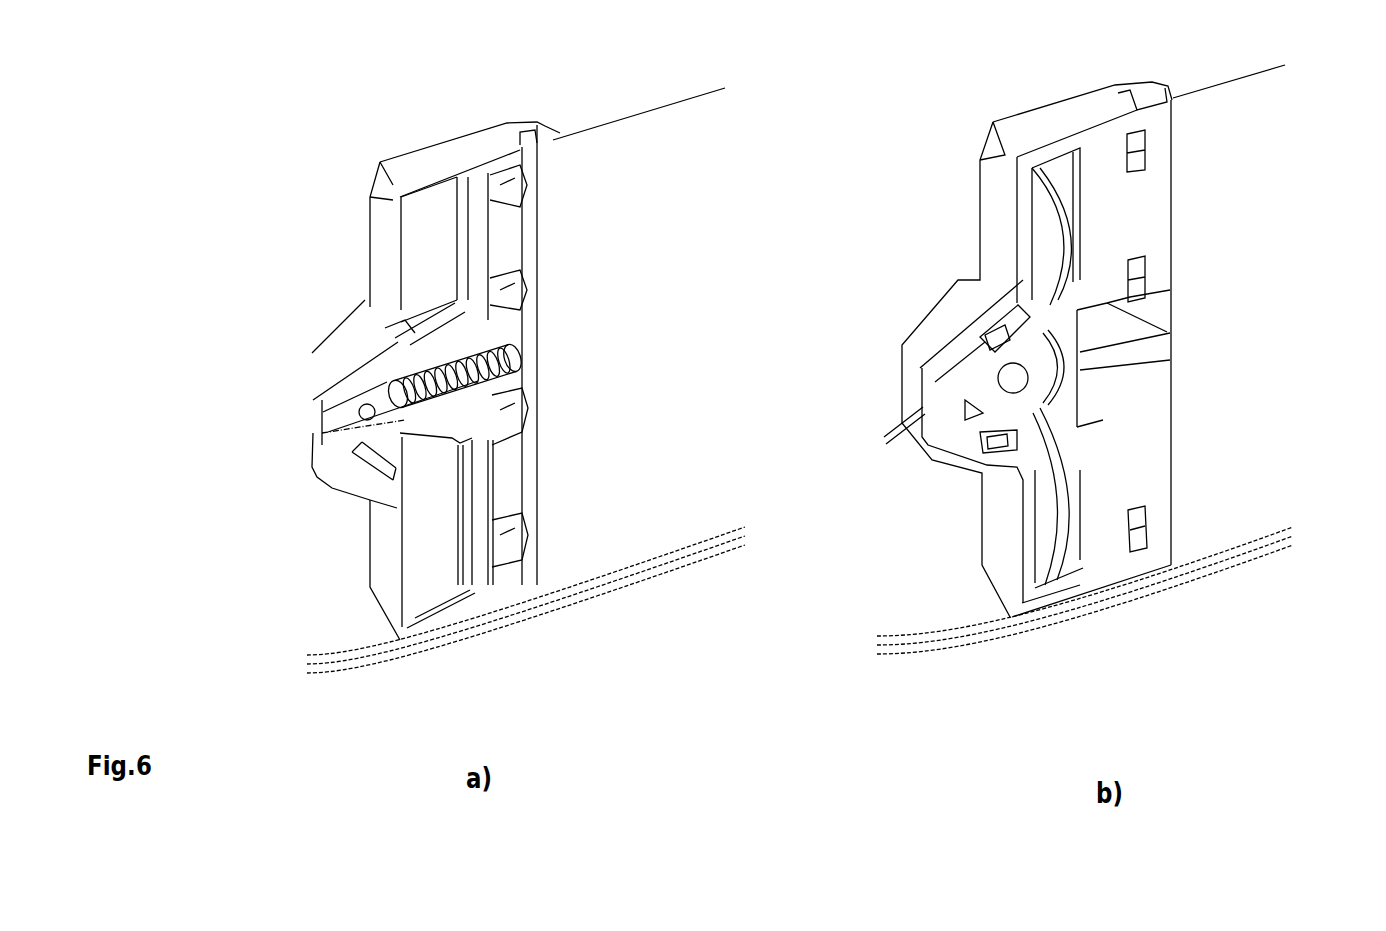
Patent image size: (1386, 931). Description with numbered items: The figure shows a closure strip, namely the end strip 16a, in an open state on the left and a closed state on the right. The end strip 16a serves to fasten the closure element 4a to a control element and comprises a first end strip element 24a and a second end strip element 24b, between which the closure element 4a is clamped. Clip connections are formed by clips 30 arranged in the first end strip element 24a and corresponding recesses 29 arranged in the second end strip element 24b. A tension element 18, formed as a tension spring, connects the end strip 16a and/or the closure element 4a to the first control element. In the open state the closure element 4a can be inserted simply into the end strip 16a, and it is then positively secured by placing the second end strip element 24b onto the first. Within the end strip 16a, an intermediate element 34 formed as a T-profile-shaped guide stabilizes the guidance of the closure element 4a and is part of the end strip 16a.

The first end strip element 24a is at (432, 162).
The second end strip element 24b is at (1153, 227).
The tension element 18 is at (495, 380).
The closure element 4a is at (643, 535).
The end strip 16a is at (668, 632).
The clip 30 is at (523, 567).
The recess 29 is at (1147, 512).
The intermediate element 34 is at (1032, 308).